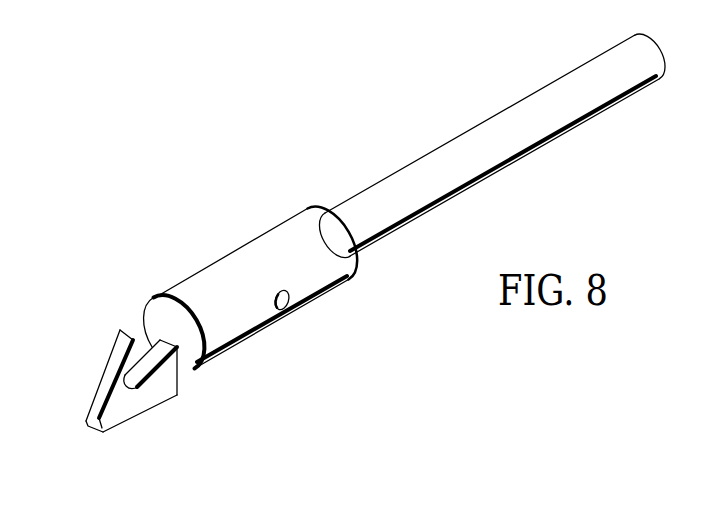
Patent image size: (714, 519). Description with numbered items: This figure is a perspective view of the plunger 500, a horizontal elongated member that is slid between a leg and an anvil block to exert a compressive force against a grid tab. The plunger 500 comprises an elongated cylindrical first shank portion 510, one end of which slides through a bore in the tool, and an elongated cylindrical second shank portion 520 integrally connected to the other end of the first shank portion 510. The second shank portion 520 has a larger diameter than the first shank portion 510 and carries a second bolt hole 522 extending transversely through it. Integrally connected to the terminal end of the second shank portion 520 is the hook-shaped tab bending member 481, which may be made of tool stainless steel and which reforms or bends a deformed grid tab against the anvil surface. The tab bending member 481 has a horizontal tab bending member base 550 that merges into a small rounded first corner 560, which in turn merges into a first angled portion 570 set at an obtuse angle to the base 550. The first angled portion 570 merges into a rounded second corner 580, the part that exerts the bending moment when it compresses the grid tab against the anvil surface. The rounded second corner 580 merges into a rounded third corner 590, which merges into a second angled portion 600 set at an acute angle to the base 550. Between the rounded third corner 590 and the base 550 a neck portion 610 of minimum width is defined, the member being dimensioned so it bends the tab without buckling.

The plunger 500 is at (192, 243).
The first shank portion 510 is at (600, 73).
The second shank portion 520 is at (320, 274).
The second bolt hole 522 is at (288, 309).
The tab bending member 481 is at (91, 344).
The tab bending member base 550 is at (161, 404).
The rounded first corner 560 is at (105, 435).
The first angled portion 570 is at (101, 380).
The rounded second corner 580 is at (121, 331).
The rounded third corner 590 is at (141, 397).
The second angled portion 600 is at (158, 350).
The neck portion 610 is at (128, 407).